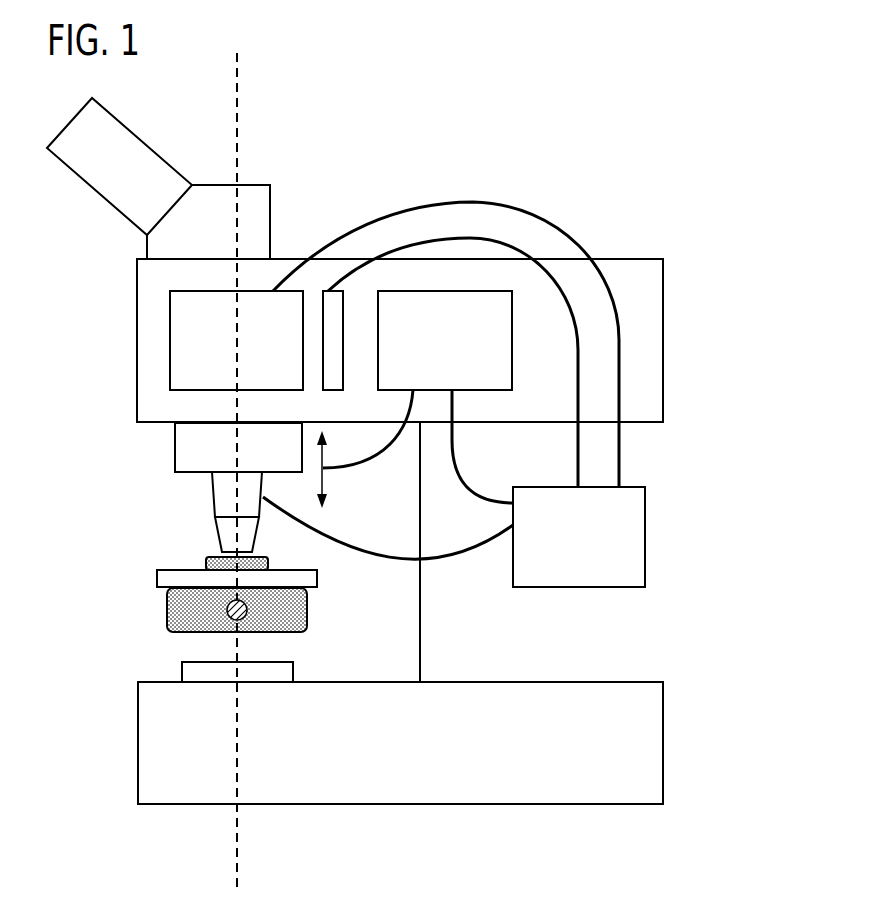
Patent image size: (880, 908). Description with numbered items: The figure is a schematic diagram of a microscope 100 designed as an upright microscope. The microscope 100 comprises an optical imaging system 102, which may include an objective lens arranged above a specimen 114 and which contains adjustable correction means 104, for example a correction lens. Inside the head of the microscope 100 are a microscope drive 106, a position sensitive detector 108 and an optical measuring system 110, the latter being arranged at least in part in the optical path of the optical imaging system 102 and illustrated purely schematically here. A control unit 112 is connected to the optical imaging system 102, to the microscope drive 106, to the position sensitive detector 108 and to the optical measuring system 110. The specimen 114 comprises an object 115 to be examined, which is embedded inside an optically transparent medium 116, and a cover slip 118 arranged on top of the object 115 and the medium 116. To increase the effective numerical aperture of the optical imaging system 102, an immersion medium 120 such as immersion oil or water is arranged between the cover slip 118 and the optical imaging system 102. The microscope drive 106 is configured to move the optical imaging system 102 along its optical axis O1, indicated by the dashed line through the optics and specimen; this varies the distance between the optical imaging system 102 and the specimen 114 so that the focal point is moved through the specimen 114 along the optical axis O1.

The microscope 100 is at (690, 335).
The optical imaging system 102 is at (192, 505).
The adjustable correction means 104 is at (218, 540).
The microscope drive 106 is at (445, 340).
The position sensitive detector 108 is at (343, 313).
The optical measuring system 110 is at (236, 340).
The control unit 112 is at (579, 537).
The specimen 114 is at (327, 565).
The object 115 is at (247, 613).
The optically transparent medium 116 is at (170, 613).
The cover slip 118 is at (157, 576).
The immersion medium 120 is at (207, 565).
The optical axis O1 is at (240, 868).